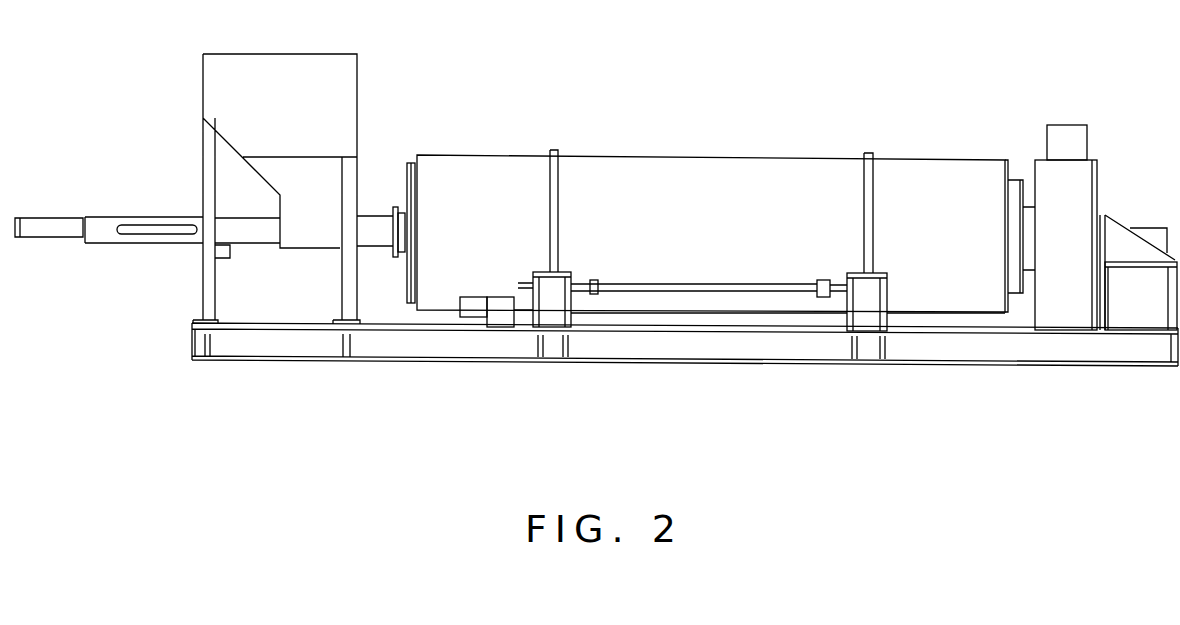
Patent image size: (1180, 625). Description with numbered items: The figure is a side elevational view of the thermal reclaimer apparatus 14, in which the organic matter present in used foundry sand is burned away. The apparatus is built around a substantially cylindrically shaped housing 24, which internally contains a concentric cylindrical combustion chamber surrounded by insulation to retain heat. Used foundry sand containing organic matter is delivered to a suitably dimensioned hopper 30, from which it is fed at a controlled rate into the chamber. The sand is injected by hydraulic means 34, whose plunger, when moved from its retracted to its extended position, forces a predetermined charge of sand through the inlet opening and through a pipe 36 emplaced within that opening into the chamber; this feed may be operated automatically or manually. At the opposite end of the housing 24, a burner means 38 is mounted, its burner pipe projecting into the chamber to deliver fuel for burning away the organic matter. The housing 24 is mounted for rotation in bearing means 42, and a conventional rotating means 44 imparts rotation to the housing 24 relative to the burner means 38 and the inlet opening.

The thermal reclaimer apparatus 14 is at (715, 373).
The cylindrically shaped housing 24 is at (746, 160).
The hopper 30 is at (289, 92).
The hydraulic means 34 is at (67, 239).
The pipe 36 is at (383, 212).
The burner means 38 is at (1118, 230).
The bearing means 42 is at (560, 283).
The rotating means 44 is at (494, 300).